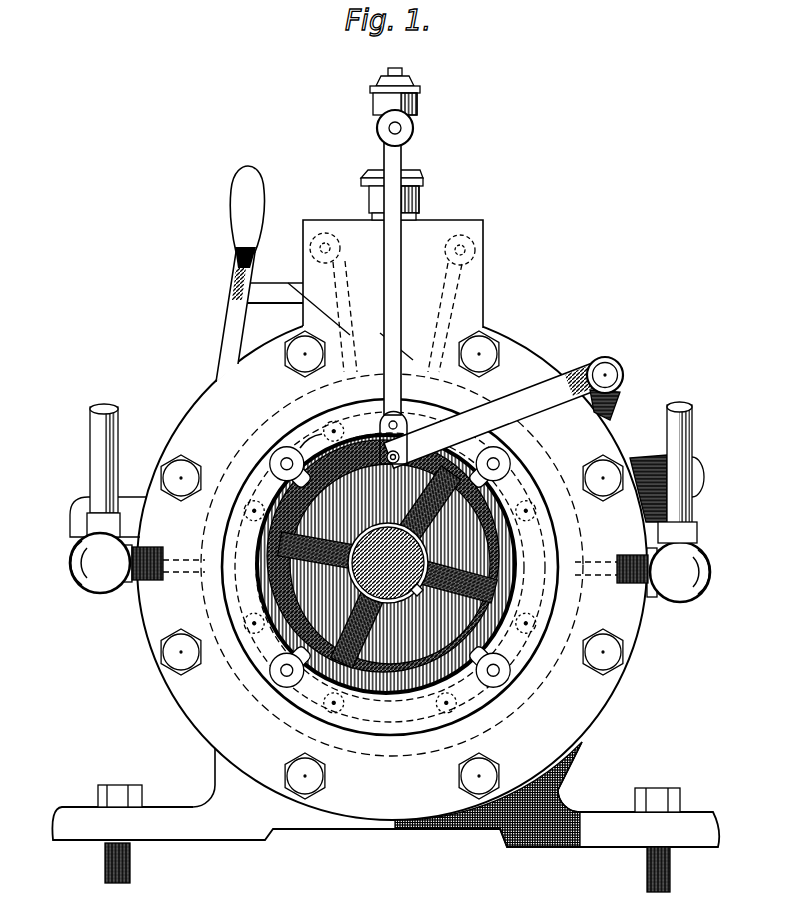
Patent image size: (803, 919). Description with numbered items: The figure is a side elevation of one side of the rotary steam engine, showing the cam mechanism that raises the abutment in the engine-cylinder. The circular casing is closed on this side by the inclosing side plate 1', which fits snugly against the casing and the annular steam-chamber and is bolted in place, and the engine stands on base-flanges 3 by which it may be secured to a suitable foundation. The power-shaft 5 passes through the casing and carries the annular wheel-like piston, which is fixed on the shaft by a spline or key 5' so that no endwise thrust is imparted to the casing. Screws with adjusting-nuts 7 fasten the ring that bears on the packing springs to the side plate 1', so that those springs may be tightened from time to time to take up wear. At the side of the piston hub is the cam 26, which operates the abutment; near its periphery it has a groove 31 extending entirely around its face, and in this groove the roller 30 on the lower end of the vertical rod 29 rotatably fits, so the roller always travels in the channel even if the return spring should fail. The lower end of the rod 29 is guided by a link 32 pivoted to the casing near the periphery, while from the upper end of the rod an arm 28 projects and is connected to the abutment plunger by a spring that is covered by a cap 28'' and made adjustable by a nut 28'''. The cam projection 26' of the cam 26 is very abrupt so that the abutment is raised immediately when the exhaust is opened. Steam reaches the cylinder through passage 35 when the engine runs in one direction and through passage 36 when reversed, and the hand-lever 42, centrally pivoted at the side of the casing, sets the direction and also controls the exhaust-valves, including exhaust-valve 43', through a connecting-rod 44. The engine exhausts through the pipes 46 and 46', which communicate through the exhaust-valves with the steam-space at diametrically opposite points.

The side plate 1' is at (392, 532).
The base-flange 3 is at (385, 838).
The power-shaft 5 is at (388, 563).
The spline or key 5' is at (409, 584).
The adjusting-nut 7 is at (276, 454).
The cam 26 is at (410, 567).
The cam projection 26' is at (283, 421).
The arm 28 is at (414, 128).
The cap 28'' is at (422, 90).
The nut 28''' is at (407, 63).
The vertical rod 29 is at (405, 298).
The roller 30 is at (398, 456).
The groove 31 is at (300, 548).
The link 32 is at (503, 412).
The passage 35 is at (452, 292).
The passage 36 is at (328, 271).
The hand-lever 42 is at (230, 292).
The exhaust-valve 43' is at (378, 572).
The connecting-rod 44 is at (123, 500).
The exhaust pipe 46 is at (679, 472).
The exhaust pipe 46' is at (78, 470).